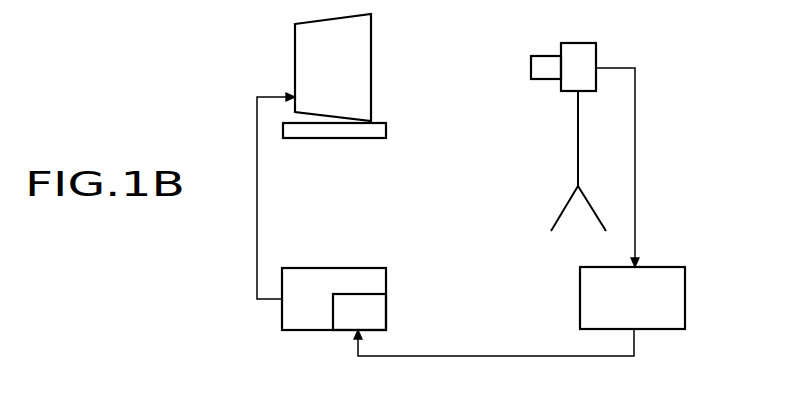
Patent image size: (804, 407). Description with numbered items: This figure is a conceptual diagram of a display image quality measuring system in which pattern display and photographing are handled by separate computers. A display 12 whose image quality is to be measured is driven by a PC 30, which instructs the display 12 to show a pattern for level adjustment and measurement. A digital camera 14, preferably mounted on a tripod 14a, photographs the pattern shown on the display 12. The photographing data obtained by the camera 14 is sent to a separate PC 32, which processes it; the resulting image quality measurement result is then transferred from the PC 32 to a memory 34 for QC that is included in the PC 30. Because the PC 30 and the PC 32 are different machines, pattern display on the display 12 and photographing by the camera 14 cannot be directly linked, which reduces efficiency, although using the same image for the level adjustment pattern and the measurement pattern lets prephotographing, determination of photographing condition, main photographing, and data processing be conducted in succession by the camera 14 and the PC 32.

The display 12 is at (371, 28).
The digital camera 14 is at (586, 43).
The tripod 14a is at (578, 140).
The PC 30 is at (364, 268).
The PC 32 is at (664, 267).
The memory for QC 34 is at (372, 324).